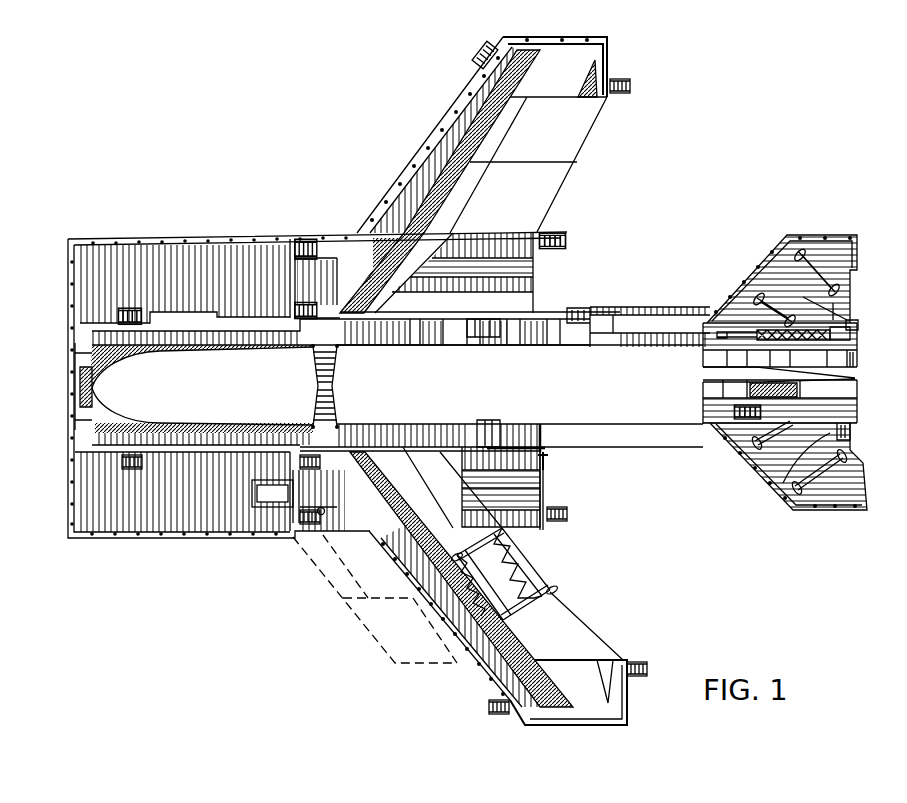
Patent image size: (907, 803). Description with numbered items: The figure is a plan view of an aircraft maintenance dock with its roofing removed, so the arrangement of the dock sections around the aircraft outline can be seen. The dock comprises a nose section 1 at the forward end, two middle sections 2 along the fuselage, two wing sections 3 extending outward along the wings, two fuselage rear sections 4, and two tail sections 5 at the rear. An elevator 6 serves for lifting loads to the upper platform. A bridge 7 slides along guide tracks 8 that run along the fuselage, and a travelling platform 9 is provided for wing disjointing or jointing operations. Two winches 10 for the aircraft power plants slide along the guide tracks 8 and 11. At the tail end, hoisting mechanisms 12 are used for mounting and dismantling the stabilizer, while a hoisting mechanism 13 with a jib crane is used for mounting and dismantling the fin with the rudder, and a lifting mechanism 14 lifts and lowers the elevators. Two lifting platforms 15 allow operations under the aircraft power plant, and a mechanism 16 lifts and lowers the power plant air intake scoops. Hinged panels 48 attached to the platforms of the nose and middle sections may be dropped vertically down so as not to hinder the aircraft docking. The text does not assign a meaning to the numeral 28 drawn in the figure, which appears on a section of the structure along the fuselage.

The nose section 1 is at (128, 253).
The middle sections 2 is at (335, 277).
The wing sections 3 is at (433, 177).
The fuselage rear sections 4 is at (608, 318).
The tail sections 5 is at (773, 262).
The elevator 6 is at (270, 497).
The bridge 7 is at (317, 393).
The guide tracks 8 is at (255, 345).
The travelling platform 9 is at (530, 563).
The winches 10 is at (545, 475).
The guide tracks 11 is at (545, 450).
The hoisting mechanisms 12 is at (812, 262).
The hoisting mechanism 13 is at (857, 320).
The lifting mechanism 14 is at (773, 485).
The lifting platforms 15 is at (545, 460).
The mechanism 16 is at (307, 470).
The beam section 28 is at (413, 318).
The hinged panels 48 is at (523, 497).